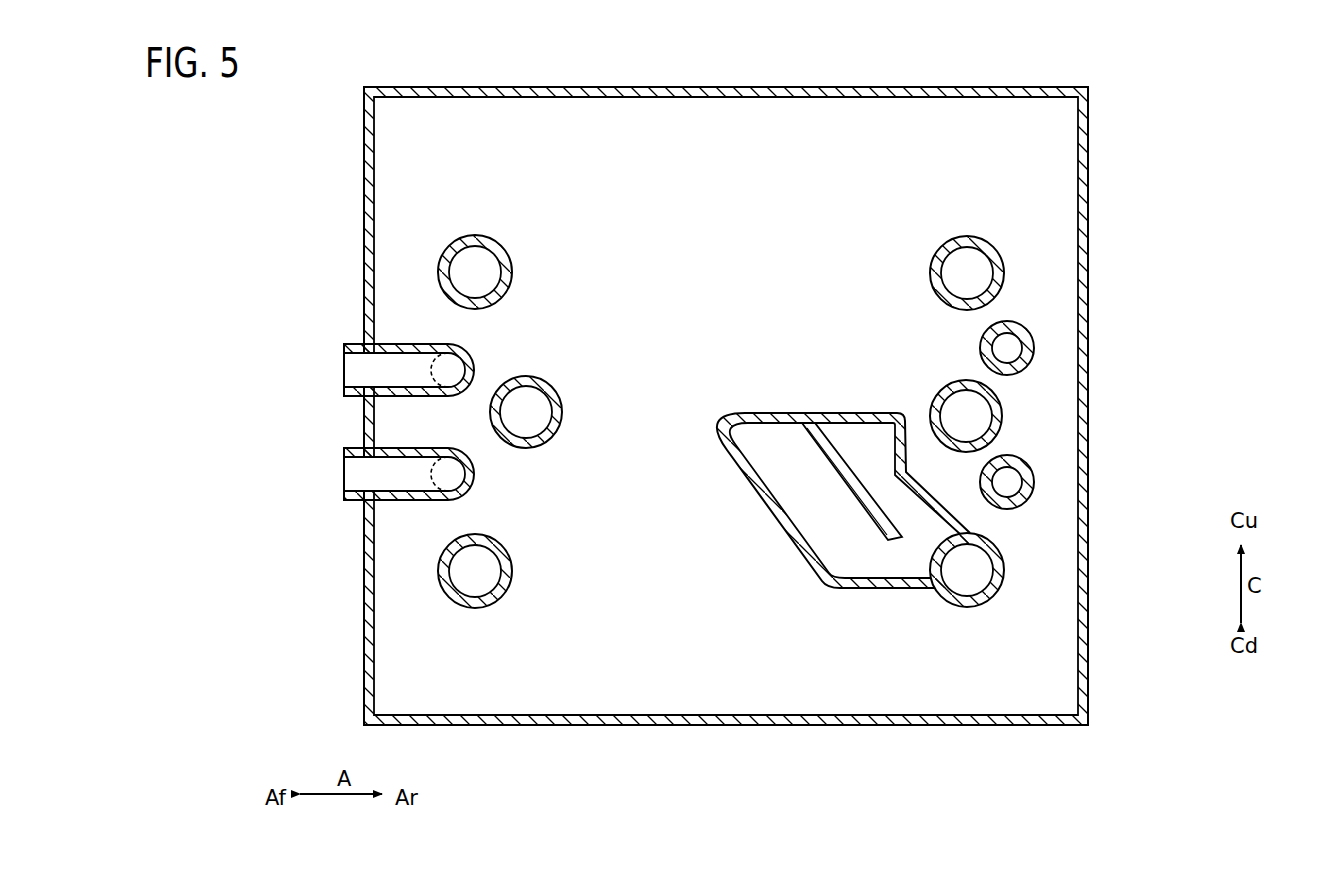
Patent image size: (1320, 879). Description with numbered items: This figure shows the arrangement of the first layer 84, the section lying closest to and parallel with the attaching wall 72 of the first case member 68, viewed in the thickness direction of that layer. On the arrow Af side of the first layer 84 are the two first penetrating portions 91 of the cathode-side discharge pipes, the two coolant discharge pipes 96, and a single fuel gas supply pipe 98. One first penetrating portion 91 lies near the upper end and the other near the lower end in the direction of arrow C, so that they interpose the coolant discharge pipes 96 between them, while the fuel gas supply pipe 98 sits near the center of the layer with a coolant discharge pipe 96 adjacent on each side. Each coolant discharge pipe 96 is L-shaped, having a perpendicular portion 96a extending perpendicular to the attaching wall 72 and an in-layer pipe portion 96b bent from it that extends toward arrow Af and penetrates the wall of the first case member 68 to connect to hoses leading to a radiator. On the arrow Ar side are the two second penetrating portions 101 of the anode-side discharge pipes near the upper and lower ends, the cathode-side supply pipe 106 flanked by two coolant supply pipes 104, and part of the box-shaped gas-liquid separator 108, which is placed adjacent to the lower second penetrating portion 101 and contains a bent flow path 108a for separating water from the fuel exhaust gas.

The first case member 68 is at (778, 88).
The attaching wall 72 is at (610, 108).
The first layer 84 is at (699, 206).
The first penetrating portion 91 is at (501, 246).
The coolant discharge pipe 96 is at (448, 421).
The perpendicular portion 96a is at (464, 351).
The in-layer pipe portion 96b is at (405, 343).
The fuel gas supply pipe 98 is at (558, 397).
The second penetrating portion 101 is at (963, 236).
The coolant supply pipe 104 is at (1013, 323).
The cathode-side supply pipe 106 is at (941, 390).
The gas-liquid separator 108 is at (840, 530).
The bent flow path 108a is at (862, 560).